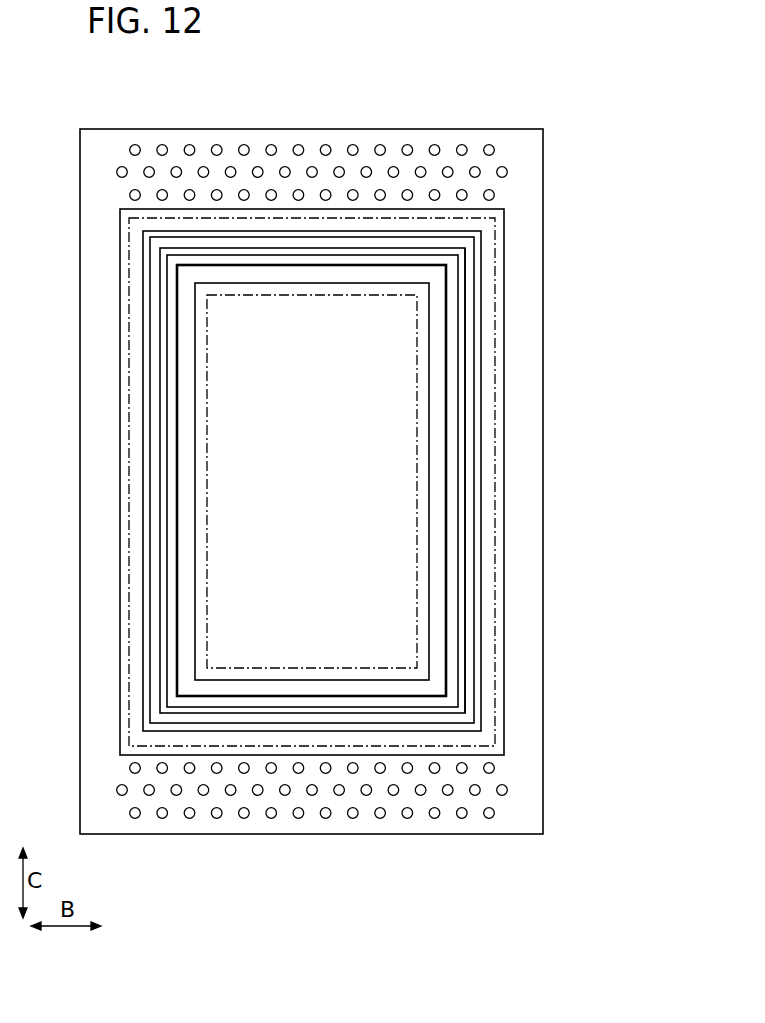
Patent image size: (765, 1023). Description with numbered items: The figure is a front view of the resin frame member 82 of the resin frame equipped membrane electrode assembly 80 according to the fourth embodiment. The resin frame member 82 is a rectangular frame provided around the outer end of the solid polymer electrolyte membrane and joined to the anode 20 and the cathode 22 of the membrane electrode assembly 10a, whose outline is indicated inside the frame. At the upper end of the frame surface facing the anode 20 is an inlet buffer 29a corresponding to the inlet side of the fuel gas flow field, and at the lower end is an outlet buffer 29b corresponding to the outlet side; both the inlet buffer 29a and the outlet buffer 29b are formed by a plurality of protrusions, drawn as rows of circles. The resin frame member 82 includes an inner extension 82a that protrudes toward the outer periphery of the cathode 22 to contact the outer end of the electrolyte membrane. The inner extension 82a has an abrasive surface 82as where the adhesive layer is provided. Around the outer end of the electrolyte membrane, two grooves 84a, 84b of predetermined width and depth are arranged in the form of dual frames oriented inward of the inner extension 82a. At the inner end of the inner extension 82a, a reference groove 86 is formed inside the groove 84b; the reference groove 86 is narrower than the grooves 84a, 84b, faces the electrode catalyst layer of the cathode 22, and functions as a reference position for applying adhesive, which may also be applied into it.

The resin frame equipped membrane electrode assembly 80 is at (343, 74).
The resin frame member 82 is at (304, 74).
The inlet buffer 29a is at (404, 145).
The outlet buffer 29b is at (406, 819).
The membrane electrode assembly 10a is at (137, 390).
The anode 20 is at (130, 465).
The groove 84a is at (477, 585).
The inner extension 82a is at (466, 352).
The abrasive surface 82as is at (468, 468).
The groove 84b is at (460, 543).
The reference groove 86 is at (446, 490).
The cathode 22 is at (393, 423).